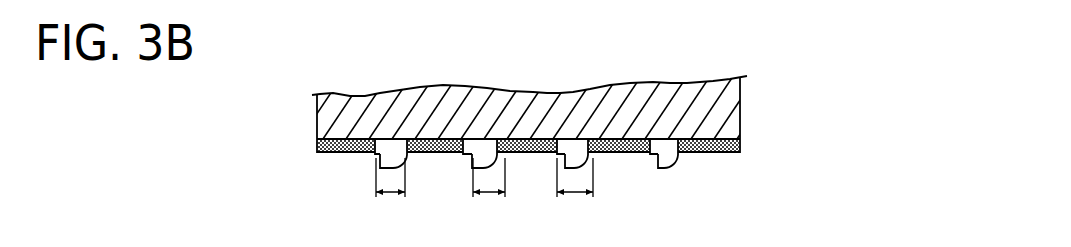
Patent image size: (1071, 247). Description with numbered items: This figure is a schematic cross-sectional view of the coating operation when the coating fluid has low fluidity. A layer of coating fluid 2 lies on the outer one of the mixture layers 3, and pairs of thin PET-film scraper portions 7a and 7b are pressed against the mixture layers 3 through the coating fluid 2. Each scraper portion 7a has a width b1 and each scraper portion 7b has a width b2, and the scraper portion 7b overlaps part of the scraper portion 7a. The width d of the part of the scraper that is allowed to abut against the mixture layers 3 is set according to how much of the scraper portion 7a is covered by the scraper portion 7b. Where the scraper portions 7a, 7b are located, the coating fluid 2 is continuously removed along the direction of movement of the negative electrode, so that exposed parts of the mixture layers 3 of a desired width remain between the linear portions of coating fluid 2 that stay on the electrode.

The mixture layer 3 is at (725, 103).
The coating fluid 2 is at (722, 152).
The scraper portion 7a is at (655, 143).
The scraper portion 7b is at (668, 165).
The width of scraper portion 7a b1 is at (387, 195).
The width of scraper portion 7b b2 is at (487, 195).
The width of the abutting part of the scraper d is at (575, 195).